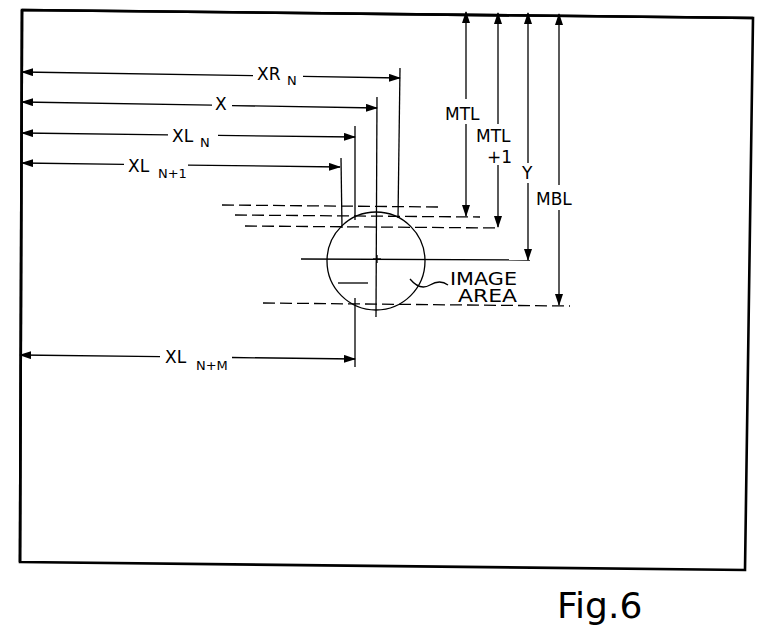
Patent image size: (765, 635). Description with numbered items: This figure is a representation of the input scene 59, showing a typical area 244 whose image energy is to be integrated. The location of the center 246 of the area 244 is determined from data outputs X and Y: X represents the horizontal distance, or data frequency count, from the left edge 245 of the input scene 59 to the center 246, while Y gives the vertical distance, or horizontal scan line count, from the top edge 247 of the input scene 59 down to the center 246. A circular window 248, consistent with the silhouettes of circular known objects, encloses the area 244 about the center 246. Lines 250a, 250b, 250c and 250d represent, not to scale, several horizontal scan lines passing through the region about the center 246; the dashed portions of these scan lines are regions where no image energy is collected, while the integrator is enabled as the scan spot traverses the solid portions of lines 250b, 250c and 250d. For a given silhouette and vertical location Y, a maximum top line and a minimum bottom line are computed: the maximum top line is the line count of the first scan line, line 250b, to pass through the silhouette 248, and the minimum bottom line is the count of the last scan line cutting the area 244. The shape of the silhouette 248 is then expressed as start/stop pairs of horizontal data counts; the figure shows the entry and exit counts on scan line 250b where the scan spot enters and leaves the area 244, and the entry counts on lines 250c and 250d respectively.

The input scene 59 is at (343, 499).
The area 244 is at (354, 270).
The left edge 245 is at (21, 272).
The center 246 is at (393, 254).
The top edge 247 is at (319, 14).
The circular window 248 is at (392, 310).
The horizontal scan line 250a is at (226, 206).
The horizontal scan line 250b is at (243, 217).
The horizontal scan line 250c is at (265, 228).
The horizontal scan line 250d is at (310, 306).